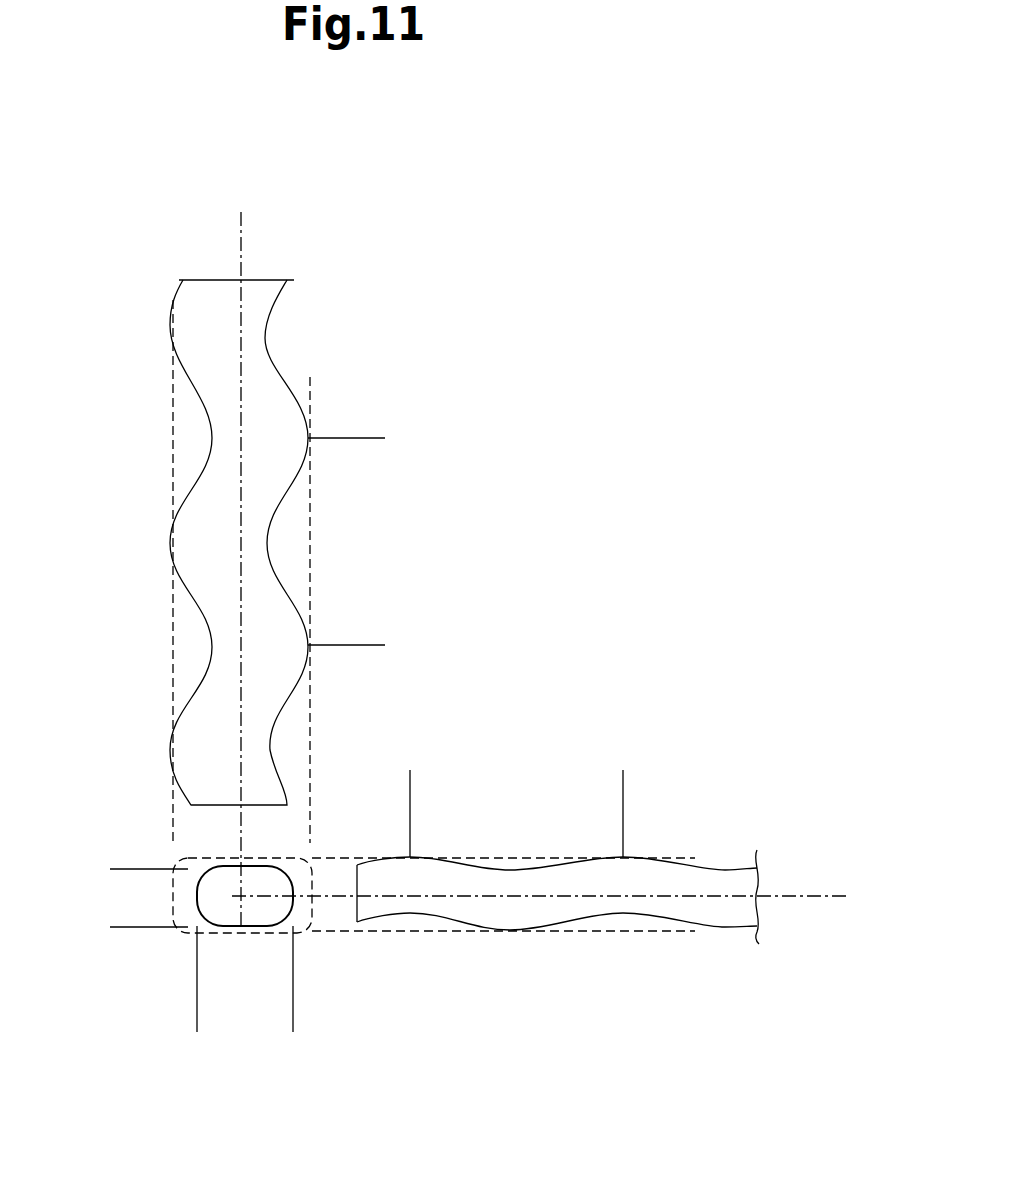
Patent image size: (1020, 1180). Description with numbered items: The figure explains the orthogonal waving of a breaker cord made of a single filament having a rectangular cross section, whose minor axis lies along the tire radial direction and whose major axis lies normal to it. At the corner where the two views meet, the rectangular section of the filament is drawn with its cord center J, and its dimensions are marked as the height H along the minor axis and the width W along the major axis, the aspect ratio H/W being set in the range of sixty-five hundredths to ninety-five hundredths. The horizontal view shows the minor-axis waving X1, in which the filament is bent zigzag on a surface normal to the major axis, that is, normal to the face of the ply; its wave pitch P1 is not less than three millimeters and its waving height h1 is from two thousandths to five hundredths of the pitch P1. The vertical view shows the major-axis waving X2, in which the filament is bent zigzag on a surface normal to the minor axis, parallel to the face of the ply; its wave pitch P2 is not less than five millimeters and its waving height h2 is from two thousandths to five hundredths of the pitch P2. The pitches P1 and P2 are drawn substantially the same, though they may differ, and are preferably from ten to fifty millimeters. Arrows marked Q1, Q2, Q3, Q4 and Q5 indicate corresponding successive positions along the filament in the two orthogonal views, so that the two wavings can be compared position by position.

The minor-axis waving X1 is at (660, 830).
The major-axis waving X2 is at (333, 345).
The cord center J is at (246, 868).
The filament height (minor axis dimension) H is at (115, 869).
The filament width (major axis dimension) W is at (293, 1023).
The wave pitch of minor-axis waving P1 is at (623, 775).
The wave pitch of major-axis waving P2 is at (375, 438).
The waving height of minor-axis waving h1 is at (624, 893).
The waving height of major-axis waving h2 is at (235, 440).
The first position Q1 is at (165, 801).
The second position Q2 is at (165, 751).
The third position Q3 is at (165, 697).
The fourth position Q4 is at (165, 646).
The fifth position Q5 is at (165, 595).